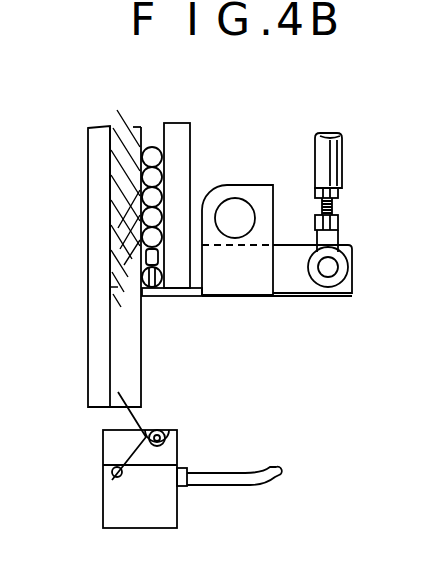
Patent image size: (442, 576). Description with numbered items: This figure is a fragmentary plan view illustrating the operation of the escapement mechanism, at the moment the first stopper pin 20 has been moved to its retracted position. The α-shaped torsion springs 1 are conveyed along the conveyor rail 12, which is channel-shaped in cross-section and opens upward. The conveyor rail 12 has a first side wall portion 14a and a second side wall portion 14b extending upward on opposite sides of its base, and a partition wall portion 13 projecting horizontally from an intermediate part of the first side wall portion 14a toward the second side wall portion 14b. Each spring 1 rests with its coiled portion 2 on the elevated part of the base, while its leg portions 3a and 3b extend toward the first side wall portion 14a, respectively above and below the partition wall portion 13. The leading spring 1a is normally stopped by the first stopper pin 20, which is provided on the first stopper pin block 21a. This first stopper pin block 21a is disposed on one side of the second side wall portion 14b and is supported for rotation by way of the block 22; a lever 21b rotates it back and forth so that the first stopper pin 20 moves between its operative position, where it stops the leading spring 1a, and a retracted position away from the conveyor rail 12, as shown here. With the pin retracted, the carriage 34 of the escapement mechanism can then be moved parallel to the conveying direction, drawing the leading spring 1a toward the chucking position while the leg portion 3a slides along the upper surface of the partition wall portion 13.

The torsion spring 1 is at (113, 234).
The leading spring 1a is at (165, 438).
The coiled portion 2 is at (153, 147).
The leg portion 3a is at (138, 423).
The leg portion 3b is at (130, 450).
The conveyor rail 12 is at (103, 353).
The partition wall portion 13 is at (136, 371).
The first side wall portion 14a is at (99, 160).
The second side wall portion 14b is at (178, 183).
The first stopper pin 20 is at (191, 291).
The first stopper pin block 21a is at (307, 296).
The lever 21b is at (333, 170).
The block 22 is at (260, 180).
The carriage 34 is at (192, 512).